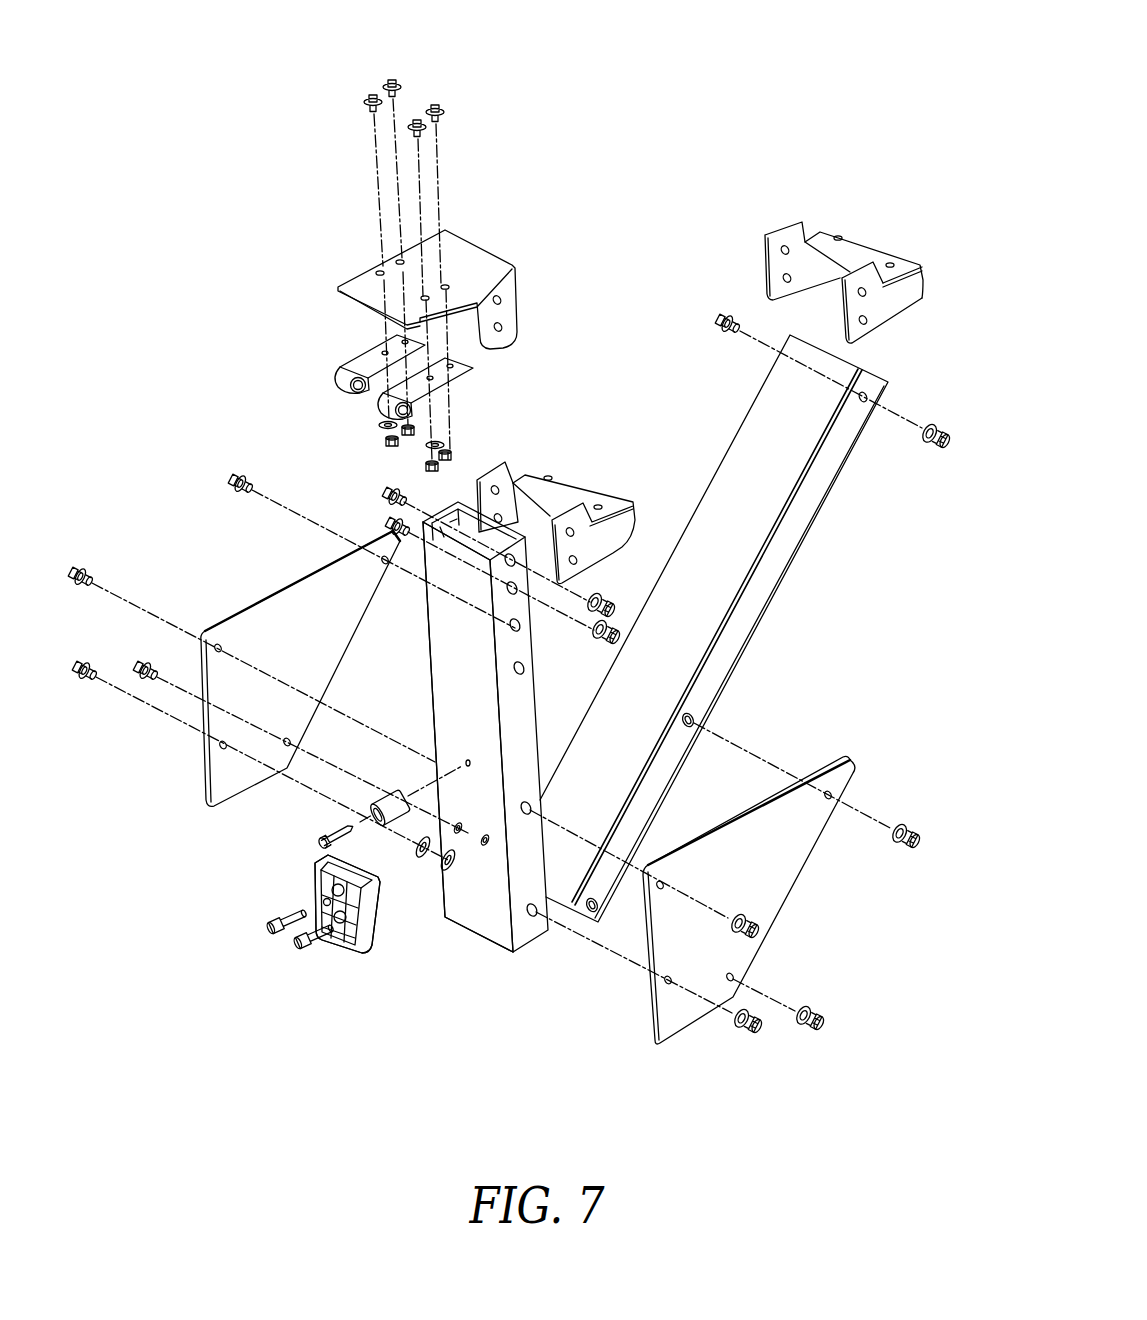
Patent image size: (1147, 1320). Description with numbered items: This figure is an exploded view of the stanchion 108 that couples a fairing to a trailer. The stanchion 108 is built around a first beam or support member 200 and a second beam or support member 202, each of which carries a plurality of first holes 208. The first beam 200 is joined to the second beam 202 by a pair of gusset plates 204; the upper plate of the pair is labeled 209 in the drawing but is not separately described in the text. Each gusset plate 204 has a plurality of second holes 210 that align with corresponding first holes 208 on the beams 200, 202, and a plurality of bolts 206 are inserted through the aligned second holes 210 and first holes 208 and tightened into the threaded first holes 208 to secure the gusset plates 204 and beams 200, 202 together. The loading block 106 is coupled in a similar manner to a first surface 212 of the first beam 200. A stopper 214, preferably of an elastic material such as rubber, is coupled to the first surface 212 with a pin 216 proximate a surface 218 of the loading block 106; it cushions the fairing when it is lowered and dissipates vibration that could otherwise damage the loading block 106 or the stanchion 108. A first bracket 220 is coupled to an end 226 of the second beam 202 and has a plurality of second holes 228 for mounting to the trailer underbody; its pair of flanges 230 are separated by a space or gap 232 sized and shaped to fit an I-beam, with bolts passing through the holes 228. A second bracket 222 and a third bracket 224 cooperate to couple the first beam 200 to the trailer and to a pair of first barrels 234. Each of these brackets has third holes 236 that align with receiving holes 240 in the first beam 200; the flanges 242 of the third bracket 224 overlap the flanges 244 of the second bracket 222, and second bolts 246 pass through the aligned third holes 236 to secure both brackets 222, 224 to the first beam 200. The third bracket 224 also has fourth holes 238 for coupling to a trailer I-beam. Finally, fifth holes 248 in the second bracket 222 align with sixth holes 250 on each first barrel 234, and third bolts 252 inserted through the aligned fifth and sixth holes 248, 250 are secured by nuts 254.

The loading block 106 is at (335, 960).
The stanchion 108 is at (236, 148).
The first beam 200 is at (591, 758).
The second beam 202 is at (754, 616).
The gusset plates 204 is at (863, 760).
The bolts 206 is at (756, 1033).
The first holes 208 is at (712, 720).
The upper side plate 209 is at (204, 622).
The second holes 210 is at (356, 573).
The first surface 212 is at (449, 680).
The stopper 214 is at (385, 780).
The pin 216 is at (306, 837).
The surface 218 is at (340, 875).
The first bracket 220 is at (841, 244).
The second bracket 222 is at (458, 390).
The third bracket 224 is at (583, 498).
The end 226 is at (895, 380).
The second holes 228 is at (846, 228).
The flanges 230 is at (791, 238).
The gap 232 is at (800, 314).
The first barrels 234 is at (356, 366).
The third holes 236 is at (516, 331).
The fourth holes 238 is at (562, 476).
The receiving holes 240 is at (516, 597).
The flanges 242 is at (540, 482).
The flanges 244 is at (509, 305).
The second bolts 246 is at (607, 638).
The fifth holes 248 is at (374, 264).
The sixth holes 250 is at (374, 330).
The third bolts 252 is at (392, 78).
The nuts 254 is at (394, 448).